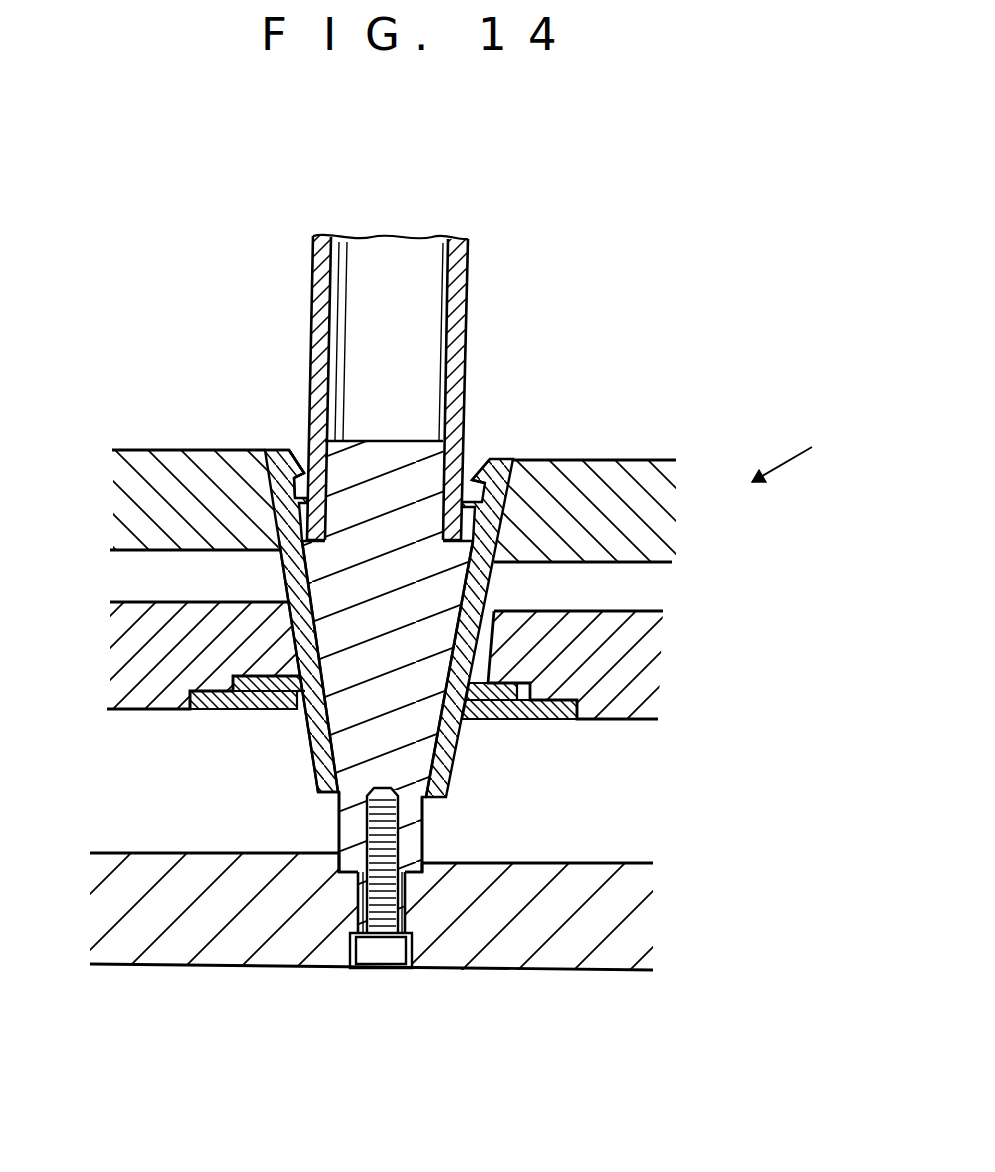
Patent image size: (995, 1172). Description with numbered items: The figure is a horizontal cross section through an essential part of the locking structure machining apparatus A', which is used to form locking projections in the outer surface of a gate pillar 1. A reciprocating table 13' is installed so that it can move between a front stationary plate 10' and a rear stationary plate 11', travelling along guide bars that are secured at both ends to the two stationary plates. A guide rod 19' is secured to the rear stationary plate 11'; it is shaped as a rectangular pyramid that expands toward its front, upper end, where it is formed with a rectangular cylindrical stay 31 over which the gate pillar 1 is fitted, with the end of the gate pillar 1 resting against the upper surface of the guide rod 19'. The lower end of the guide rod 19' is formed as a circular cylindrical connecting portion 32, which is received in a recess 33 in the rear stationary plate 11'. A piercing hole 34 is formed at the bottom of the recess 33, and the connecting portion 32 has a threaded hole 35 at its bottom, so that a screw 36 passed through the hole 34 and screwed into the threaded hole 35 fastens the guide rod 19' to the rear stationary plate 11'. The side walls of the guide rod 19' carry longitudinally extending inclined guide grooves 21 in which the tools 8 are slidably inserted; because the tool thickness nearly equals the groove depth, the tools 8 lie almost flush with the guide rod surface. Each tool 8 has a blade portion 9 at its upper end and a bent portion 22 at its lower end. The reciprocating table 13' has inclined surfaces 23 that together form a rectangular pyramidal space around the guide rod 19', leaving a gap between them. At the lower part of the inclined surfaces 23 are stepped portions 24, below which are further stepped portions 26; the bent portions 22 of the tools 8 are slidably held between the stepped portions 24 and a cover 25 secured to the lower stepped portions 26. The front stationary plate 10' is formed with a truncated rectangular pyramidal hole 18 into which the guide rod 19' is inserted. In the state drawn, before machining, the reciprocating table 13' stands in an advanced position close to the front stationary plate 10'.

The gate pillar 1 is at (461, 262).
The rectangular cylindrical stay 31 is at (400, 453).
The blade portion 9 is at (308, 463).
The truncated rectangular pyramidal hole 18 is at (278, 452).
The inclined surfaces 23 is at (273, 480).
The bent portion 22 is at (273, 674).
The guide rod 19' is at (516, 590).
The tools 8 is at (280, 570).
The front stationary plate 10' is at (604, 485).
The reciprocating table 13' is at (450, 698).
The stepped portions 24 is at (280, 605).
The cover 25 is at (250, 709).
The stepped portions 26 is at (192, 712).
The inclined guide grooves 21 is at (640, 642).
The rear stationary plate 11' is at (378, 949).
The connecting portion 32 is at (348, 840).
The recess 33 is at (420, 858).
The piercing hole 34 is at (383, 890).
The threaded hole 35 is at (400, 830).
The screw 36 is at (387, 950).
The locking structure machining apparatus A' is at (803, 442).